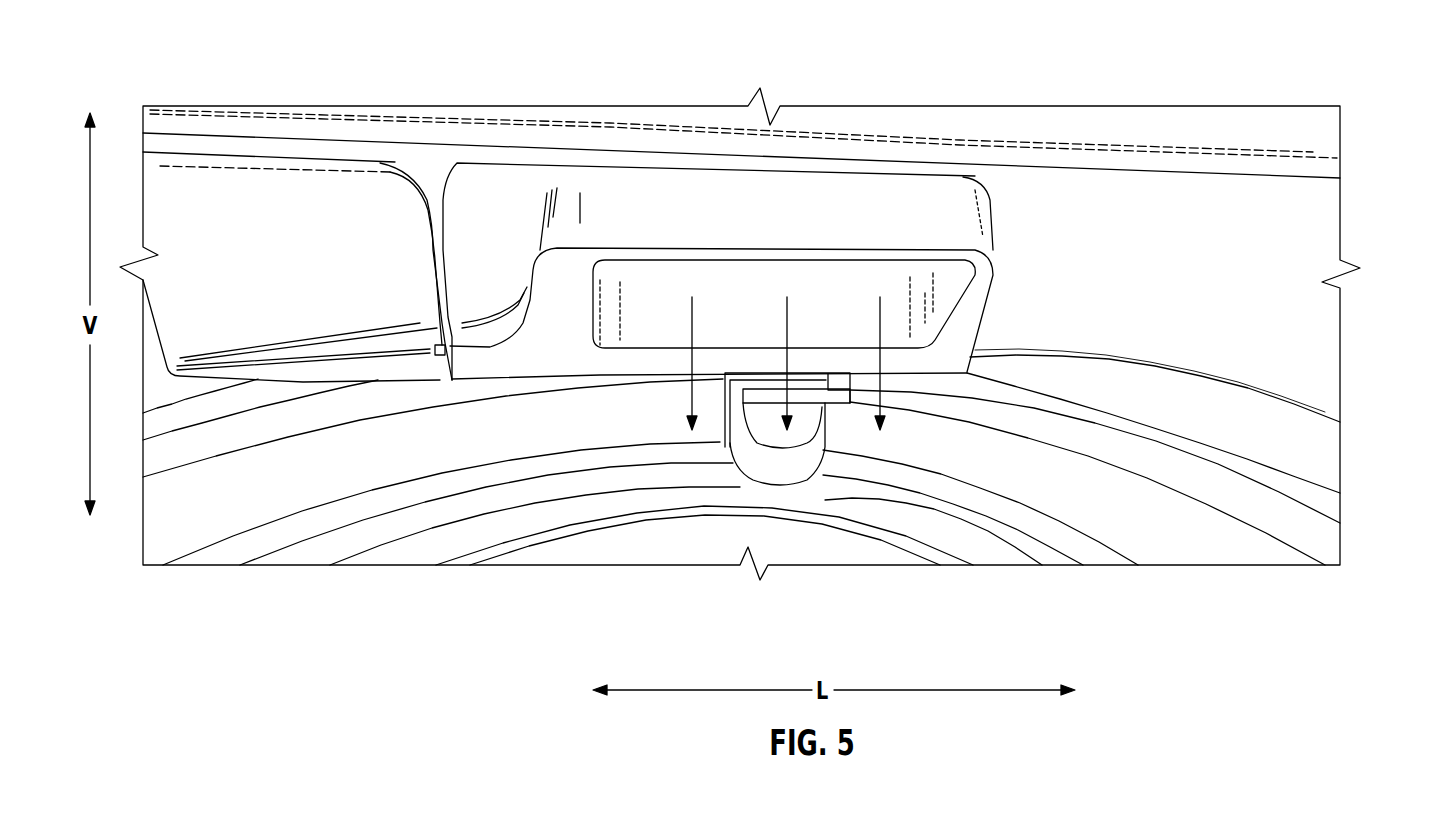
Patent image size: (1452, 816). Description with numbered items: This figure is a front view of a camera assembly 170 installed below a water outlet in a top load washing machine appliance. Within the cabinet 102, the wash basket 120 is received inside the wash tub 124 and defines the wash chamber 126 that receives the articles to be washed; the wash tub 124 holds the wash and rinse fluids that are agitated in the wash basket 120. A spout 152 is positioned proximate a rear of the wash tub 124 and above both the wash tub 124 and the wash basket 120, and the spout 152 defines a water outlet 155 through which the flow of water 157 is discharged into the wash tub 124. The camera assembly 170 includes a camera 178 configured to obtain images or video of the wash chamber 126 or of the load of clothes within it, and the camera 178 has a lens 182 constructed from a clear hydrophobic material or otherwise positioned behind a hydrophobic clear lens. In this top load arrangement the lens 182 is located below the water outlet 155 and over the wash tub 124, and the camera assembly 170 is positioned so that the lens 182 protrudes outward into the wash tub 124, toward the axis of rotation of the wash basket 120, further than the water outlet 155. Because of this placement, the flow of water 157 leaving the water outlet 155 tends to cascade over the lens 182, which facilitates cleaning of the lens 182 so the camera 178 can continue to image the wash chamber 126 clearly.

The cabinet 102 is at (1313, 321).
The wash basket 120 is at (838, 550).
The wash tub 124 is at (1323, 462).
The wash chamber 126 is at (590, 550).
The spout 152 is at (628, 217).
The water outlet 155 is at (856, 262).
The flow of water 157 is at (880, 390).
The camera assembly 170 is at (746, 483).
The camera 178 is at (812, 463).
The lens 182 is at (781, 497).